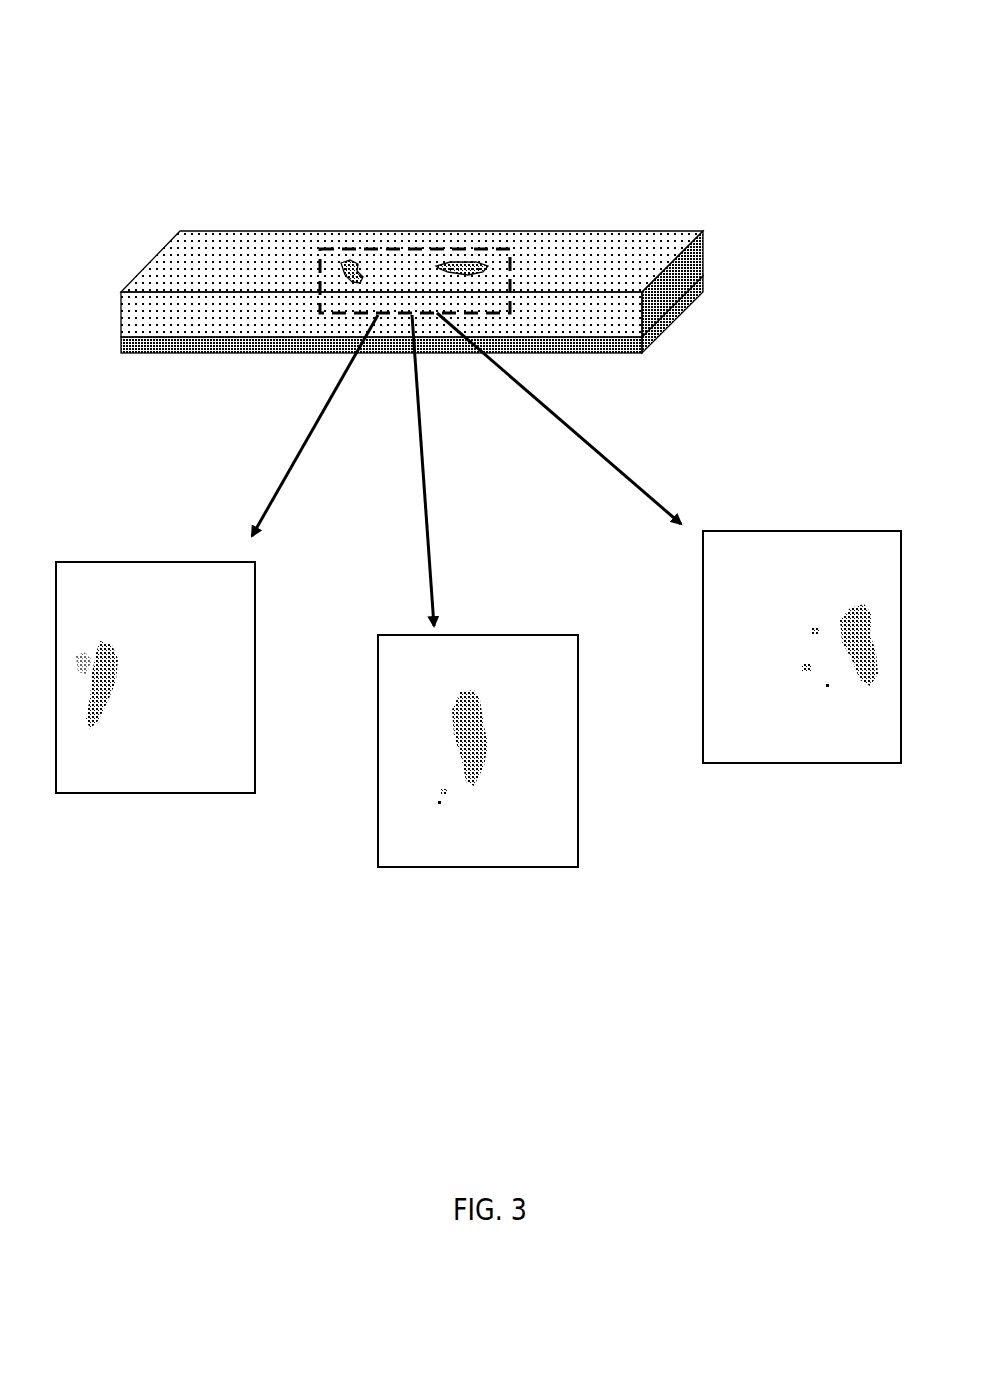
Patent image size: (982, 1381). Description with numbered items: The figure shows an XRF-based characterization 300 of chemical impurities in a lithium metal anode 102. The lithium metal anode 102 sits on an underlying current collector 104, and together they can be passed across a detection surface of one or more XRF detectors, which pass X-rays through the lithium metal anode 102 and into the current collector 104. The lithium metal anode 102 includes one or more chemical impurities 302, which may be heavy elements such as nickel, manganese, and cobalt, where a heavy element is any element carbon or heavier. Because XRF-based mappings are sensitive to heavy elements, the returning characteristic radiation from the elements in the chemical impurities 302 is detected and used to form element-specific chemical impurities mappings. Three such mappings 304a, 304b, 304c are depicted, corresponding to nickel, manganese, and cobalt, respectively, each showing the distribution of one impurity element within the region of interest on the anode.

The XRF-based characterization 300 is at (110, 36).
The lithium metal anode 102 is at (168, 265).
The current collector 104 is at (120, 340).
The chemical impurities 302 is at (349, 262).
The chemical impurities mapping 304a is at (108, 562).
The chemical impurities mapping 304b is at (462, 870).
The chemical impurities mapping 304c is at (800, 531).